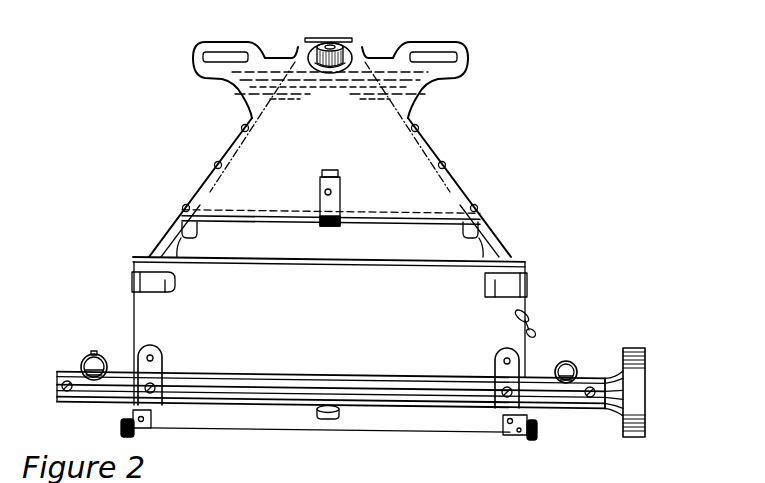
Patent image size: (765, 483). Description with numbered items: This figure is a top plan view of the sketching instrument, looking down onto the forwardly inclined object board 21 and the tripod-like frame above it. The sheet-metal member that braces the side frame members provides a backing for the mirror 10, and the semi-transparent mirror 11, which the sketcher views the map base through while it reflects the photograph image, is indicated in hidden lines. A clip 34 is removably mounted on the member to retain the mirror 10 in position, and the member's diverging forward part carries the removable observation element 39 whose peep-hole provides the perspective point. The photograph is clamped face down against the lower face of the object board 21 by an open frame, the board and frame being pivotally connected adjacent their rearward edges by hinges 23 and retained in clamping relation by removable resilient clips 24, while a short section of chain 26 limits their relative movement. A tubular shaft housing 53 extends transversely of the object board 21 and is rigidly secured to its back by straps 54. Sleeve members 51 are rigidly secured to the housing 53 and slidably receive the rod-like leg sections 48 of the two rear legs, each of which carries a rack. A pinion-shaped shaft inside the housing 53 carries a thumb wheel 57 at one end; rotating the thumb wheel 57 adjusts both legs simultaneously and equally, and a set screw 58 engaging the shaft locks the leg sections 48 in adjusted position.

The mirror 10 is at (437, 145).
The semi-transparent mirror 11 is at (353, 96).
The observation element 39 is at (347, 50).
The clip 34 is at (343, 196).
The object board 21 is at (378, 301).
The resilient clips 24 is at (133, 282).
The chain 26 is at (536, 338).
The sleeve member 51 is at (86, 357).
The leg section 48 is at (118, 335).
The tubular shaft housing 53 is at (367, 375).
The straps 54 is at (161, 347).
The thumb wheel 57 is at (645, 365).
The hinges 23 is at (120, 428).
The set screw 58 is at (328, 421).